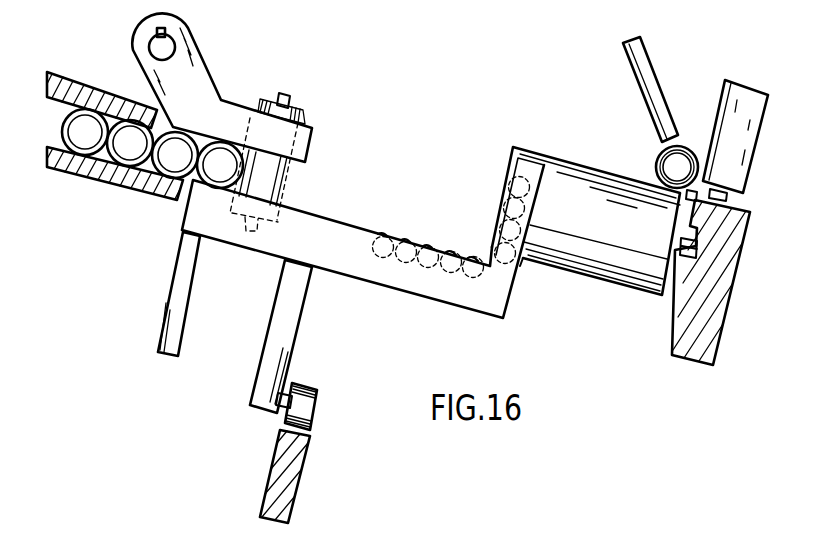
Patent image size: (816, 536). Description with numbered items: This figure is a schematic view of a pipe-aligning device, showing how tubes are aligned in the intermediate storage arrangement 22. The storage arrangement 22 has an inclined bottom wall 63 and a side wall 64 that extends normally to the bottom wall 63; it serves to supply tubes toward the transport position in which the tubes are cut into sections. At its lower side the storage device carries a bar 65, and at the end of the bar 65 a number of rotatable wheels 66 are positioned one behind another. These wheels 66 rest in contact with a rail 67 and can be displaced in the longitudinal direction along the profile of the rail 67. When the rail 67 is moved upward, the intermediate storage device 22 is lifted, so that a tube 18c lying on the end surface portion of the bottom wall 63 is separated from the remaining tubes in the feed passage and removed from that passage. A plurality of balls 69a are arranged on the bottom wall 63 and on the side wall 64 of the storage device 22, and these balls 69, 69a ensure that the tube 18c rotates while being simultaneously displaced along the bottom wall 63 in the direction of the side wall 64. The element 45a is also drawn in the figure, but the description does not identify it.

The tube 18c is at (197, 183).
The bottom wall 63 is at (336, 226).
The intermediate storage arrangement 22 is at (357, 247).
The side wall 64 is at (507, 200).
The bar 65 is at (288, 328).
The rotatable wheels 66 is at (307, 407).
The rail 67 is at (288, 487).
The balls 69 is at (476, 268).
The balls 69a is at (520, 266).
The roller arm 45a is at (642, 70).